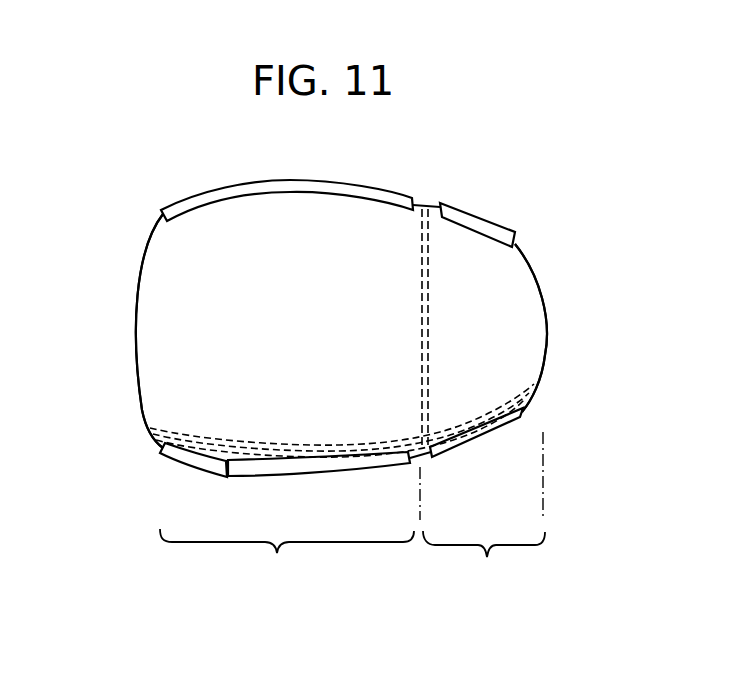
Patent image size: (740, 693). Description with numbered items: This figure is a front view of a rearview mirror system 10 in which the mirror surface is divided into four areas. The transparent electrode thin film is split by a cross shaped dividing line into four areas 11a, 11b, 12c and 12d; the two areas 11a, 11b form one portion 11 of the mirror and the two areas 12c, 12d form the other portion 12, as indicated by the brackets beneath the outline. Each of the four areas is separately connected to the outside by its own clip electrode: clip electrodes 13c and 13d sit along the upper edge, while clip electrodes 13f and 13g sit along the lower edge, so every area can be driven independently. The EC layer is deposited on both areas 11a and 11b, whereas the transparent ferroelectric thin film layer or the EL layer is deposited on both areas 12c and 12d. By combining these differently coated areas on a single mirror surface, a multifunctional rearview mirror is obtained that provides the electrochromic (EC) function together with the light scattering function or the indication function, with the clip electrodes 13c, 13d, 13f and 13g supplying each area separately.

The golf club head 10 is at (133, 259).
The face portion 11 is at (290, 525).
The toe portion 12 is at (484, 511).
The area of the transparent electrode thin film 11a is at (153, 393).
The area of the transparent electrode thin film 11b is at (227, 461).
The area of the transparent electrode thin film 12c is at (539, 318).
The area of the transparent electrode thin film 12d is at (527, 407).
The clip electrode 13c is at (182, 200).
The clip electrode 13d is at (462, 212).
The clip electrode 13f is at (347, 468).
The clip electrode 13g is at (467, 440).